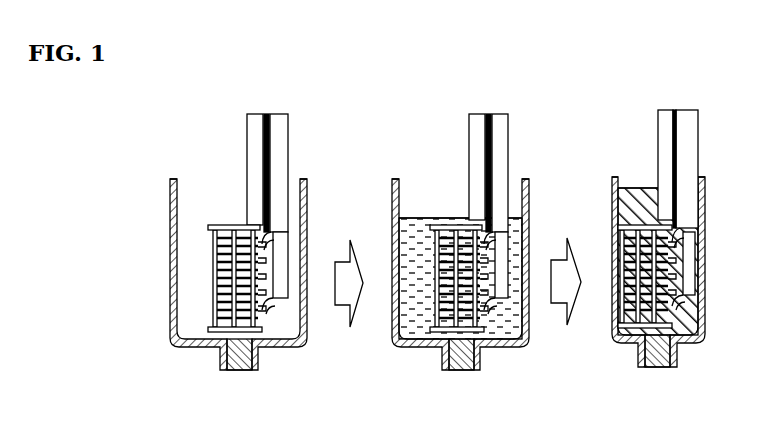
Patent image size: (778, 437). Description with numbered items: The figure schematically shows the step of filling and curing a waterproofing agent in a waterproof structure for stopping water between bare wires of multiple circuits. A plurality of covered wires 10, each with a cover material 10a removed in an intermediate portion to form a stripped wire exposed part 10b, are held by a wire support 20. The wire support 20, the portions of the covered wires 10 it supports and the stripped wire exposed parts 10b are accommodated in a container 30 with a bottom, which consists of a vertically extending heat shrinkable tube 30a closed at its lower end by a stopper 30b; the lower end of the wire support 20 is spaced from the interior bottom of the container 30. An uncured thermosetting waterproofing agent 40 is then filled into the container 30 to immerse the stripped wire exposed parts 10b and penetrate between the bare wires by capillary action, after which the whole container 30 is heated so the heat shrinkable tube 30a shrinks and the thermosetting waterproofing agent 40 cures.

The covered wire 10 is at (471, 171).
The cover material 10a is at (255, 148).
The stripped wire exposed part 10b is at (278, 236).
The wire support 20 is at (208, 308).
The container 30 is at (200, 352).
The heat shrinkable tube 30a is at (172, 193).
The stopper 30b is at (237, 372).
The thermosetting waterproofing agent 40 is at (420, 232).